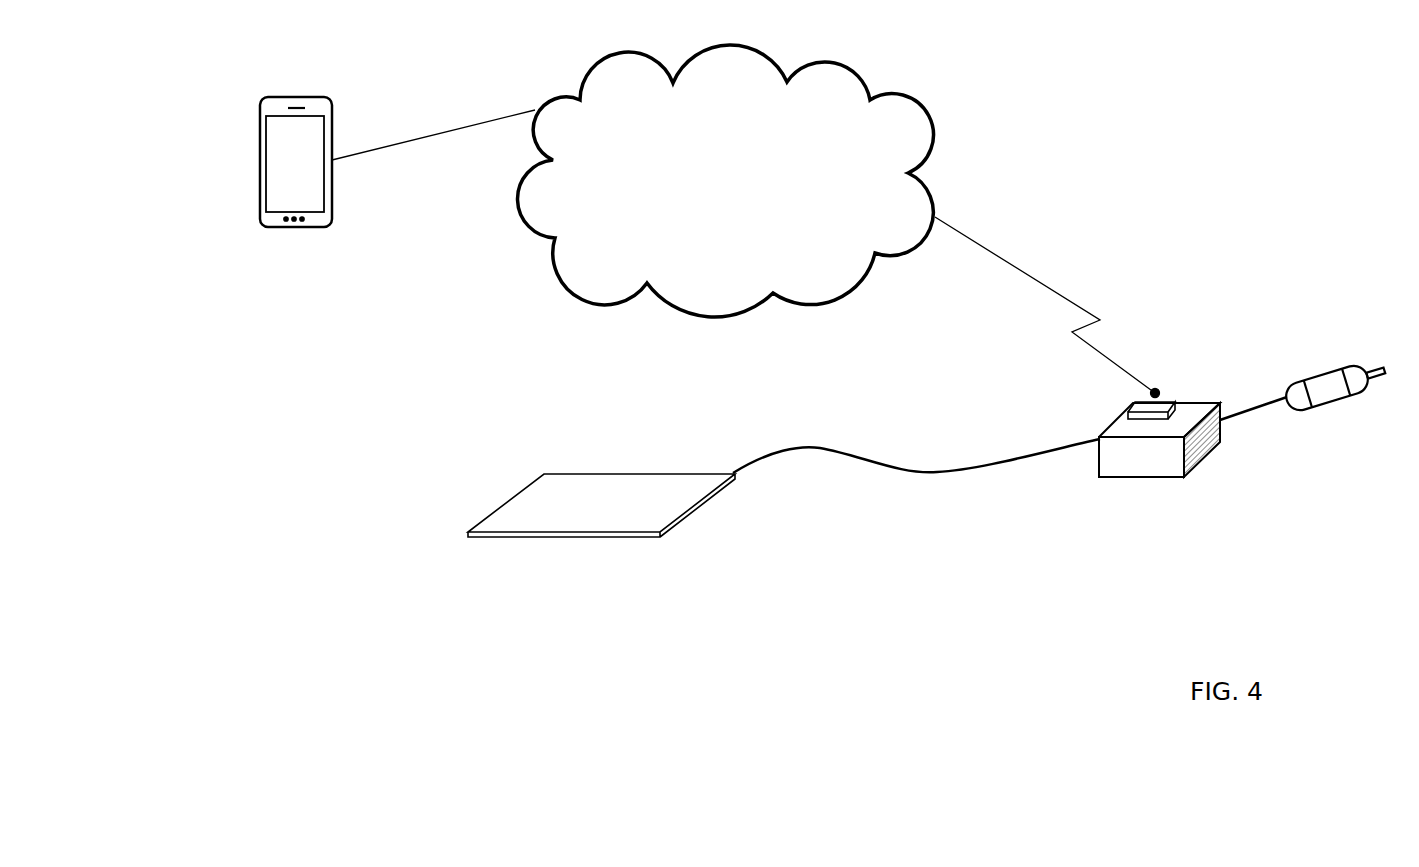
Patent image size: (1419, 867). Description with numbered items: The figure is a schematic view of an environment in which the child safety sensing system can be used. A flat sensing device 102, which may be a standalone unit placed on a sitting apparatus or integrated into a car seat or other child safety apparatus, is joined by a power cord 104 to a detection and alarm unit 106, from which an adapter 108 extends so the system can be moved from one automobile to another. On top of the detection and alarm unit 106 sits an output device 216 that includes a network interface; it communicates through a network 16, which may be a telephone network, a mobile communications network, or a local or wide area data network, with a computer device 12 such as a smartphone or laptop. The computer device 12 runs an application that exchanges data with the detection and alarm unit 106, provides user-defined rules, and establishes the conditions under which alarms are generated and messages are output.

The computer device 12 is at (257, 143).
The network 16 is at (726, 181).
The sensing device 102 is at (700, 473).
The power cord 104 is at (892, 473).
The detection and alarm unit 106 is at (1198, 470).
The adapter 108 is at (1323, 370).
The output device 216 is at (1160, 407).